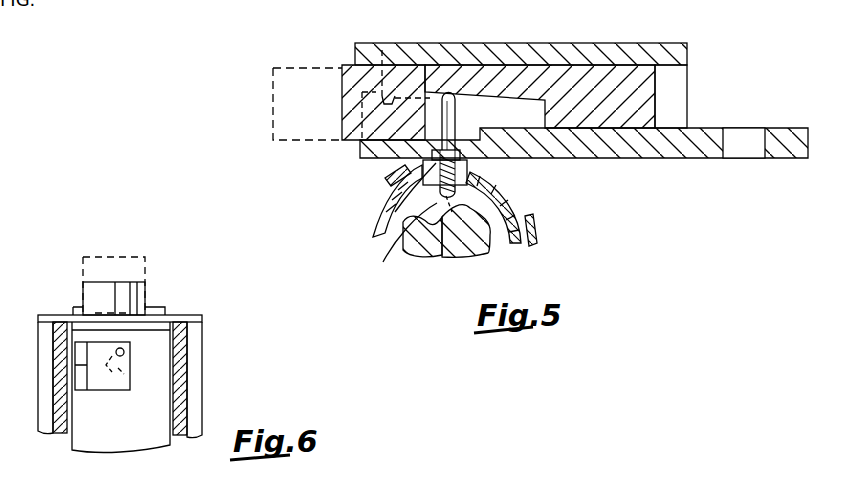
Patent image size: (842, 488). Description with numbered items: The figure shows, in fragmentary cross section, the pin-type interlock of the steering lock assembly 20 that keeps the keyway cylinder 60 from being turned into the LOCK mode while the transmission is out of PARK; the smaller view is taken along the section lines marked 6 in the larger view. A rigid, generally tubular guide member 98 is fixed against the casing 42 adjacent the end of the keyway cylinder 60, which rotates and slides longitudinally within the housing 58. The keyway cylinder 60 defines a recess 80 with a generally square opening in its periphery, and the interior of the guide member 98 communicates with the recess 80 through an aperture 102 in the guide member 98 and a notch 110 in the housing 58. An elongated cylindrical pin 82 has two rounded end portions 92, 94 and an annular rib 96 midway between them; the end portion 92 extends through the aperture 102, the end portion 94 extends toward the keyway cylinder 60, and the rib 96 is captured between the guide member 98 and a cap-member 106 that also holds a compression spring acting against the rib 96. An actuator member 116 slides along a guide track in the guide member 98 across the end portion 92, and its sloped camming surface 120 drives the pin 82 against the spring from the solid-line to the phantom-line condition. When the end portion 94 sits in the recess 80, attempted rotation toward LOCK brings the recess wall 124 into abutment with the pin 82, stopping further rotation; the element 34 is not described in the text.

In FIG. 5, the steering lock assembly 20 is at (305, 50).
In FIG. 5, the housing member 34 is at (313, 5).
In FIG. 5, the casing 42 is at (536, 222).
In FIG. 5, the housing 58 is at (513, 245).
In FIG. 6, the keyway cylinder 60 is at (165, 440).
In FIG. 5, the recess 80 is at (397, 241).
In FIG. 6, the recess 80 is at (93, 377).
In FIG. 5, the pin 82 is at (455, 112).
In FIG. 6, the pin 82 is at (125, 352).
In FIG. 5, the pin end portion 92 is at (445, 110).
In FIG. 5, the pin end portion 94 is at (400, 185).
In FIG. 5, the annular rib 96 is at (400, 171).
In FIG. 5, the guide member 98 is at (617, 0).
In FIG. 5, the aperture 102 is at (460, 130).
In FIG. 5, the cap-member 106 is at (395, 212).
In FIG. 5, the notch 110 is at (478, 173).
In FIG. 5, the actuator member 116 is at (422, 75).
In FIG. 5, the camming surface 120 is at (382, 50).
In FIG. 5, the recess wall 124 is at (447, 250).
In FIG. 6, the recess wall 124 is at (127, 368).
In FIG. 5, the section line FIG. 6 is at (300, 201).